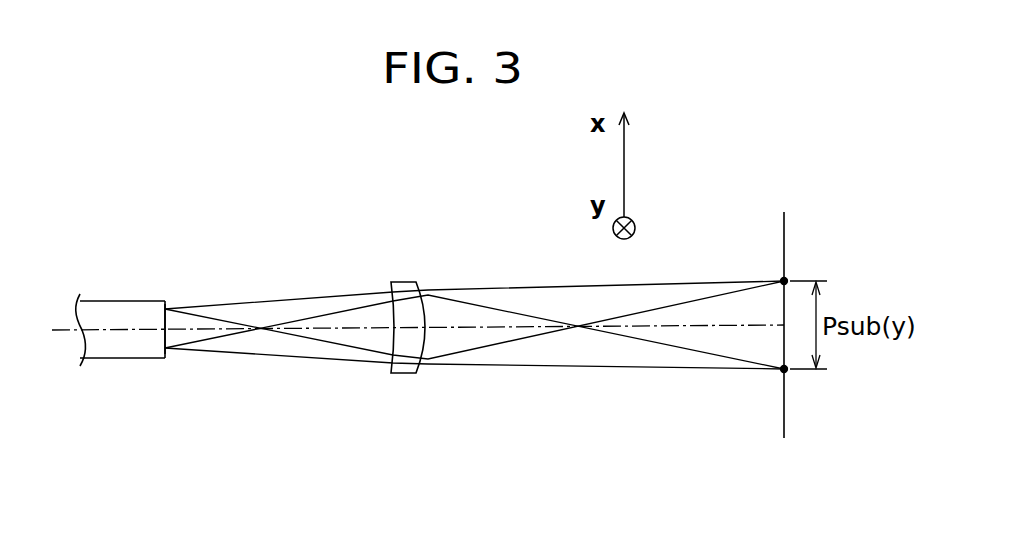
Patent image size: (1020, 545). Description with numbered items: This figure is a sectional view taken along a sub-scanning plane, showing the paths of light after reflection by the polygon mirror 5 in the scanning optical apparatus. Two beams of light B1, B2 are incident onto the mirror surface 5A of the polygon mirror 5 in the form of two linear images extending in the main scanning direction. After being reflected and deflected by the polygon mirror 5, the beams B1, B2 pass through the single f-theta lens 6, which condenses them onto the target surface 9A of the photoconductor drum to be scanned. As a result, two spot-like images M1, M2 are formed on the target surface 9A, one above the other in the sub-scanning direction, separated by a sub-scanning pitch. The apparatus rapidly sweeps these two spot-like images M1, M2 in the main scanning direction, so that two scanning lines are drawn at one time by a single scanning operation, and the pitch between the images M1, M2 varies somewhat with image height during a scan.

The polygon mirror 5 is at (122, 301).
The mirror surface 5A is at (167, 303).
The beam of light B1 is at (247, 303).
The beam of light B2 is at (259, 355).
The f-theta lens 6 is at (404, 282).
The target surface 9A is at (783, 222).
The spot-like image M1 is at (781, 371).
The spot-like image M2 is at (781, 279).